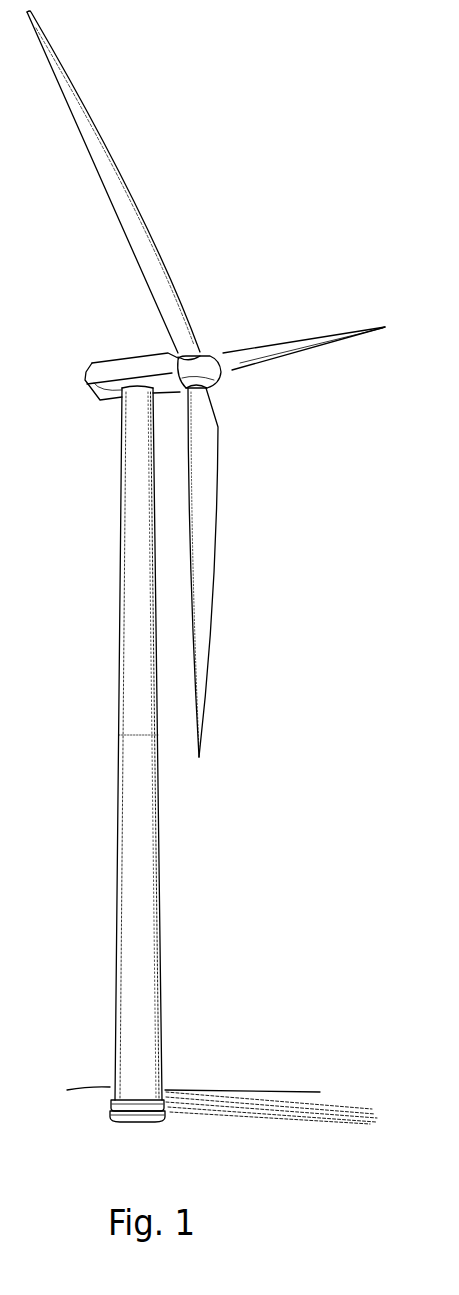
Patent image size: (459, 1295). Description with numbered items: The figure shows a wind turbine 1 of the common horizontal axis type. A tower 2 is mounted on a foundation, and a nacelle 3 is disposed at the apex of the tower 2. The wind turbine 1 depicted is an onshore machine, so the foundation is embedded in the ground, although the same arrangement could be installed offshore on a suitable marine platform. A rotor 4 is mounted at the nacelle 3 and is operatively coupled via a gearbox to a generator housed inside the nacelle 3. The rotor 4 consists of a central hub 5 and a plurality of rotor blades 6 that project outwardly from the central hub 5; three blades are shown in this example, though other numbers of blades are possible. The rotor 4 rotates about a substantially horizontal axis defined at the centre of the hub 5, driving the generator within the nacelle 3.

The wind turbine 1 is at (347, 179).
The tower 2 is at (137, 602).
The nacelle 3 is at (97, 370).
The rotor 4 is at (230, 387).
The central hub 5 is at (209, 362).
The rotor blades 6 is at (112, 186).